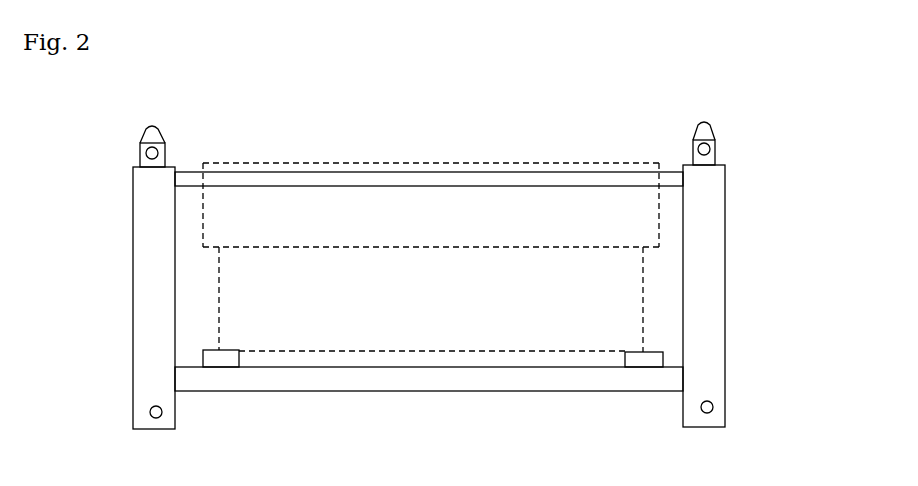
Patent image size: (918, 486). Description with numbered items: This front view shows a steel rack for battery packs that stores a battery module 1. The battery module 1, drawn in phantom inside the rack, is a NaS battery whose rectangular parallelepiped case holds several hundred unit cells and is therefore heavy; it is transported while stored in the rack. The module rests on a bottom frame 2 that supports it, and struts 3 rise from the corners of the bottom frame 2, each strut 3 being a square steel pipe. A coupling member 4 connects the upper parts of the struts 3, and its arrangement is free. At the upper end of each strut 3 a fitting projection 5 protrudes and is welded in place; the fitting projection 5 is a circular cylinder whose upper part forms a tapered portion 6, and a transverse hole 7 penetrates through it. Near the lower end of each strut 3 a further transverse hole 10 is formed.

The battery module 1 is at (468, 223).
The bottom frame 2 is at (435, 378).
The strut 3 is at (147, 293).
The coupling member 4 is at (552, 181).
The fitting projection 5 is at (715, 143).
The tapered portion 6 is at (713, 130).
The transverse hole 7 is at (713, 148).
The transverse hole 10 is at (713, 407).